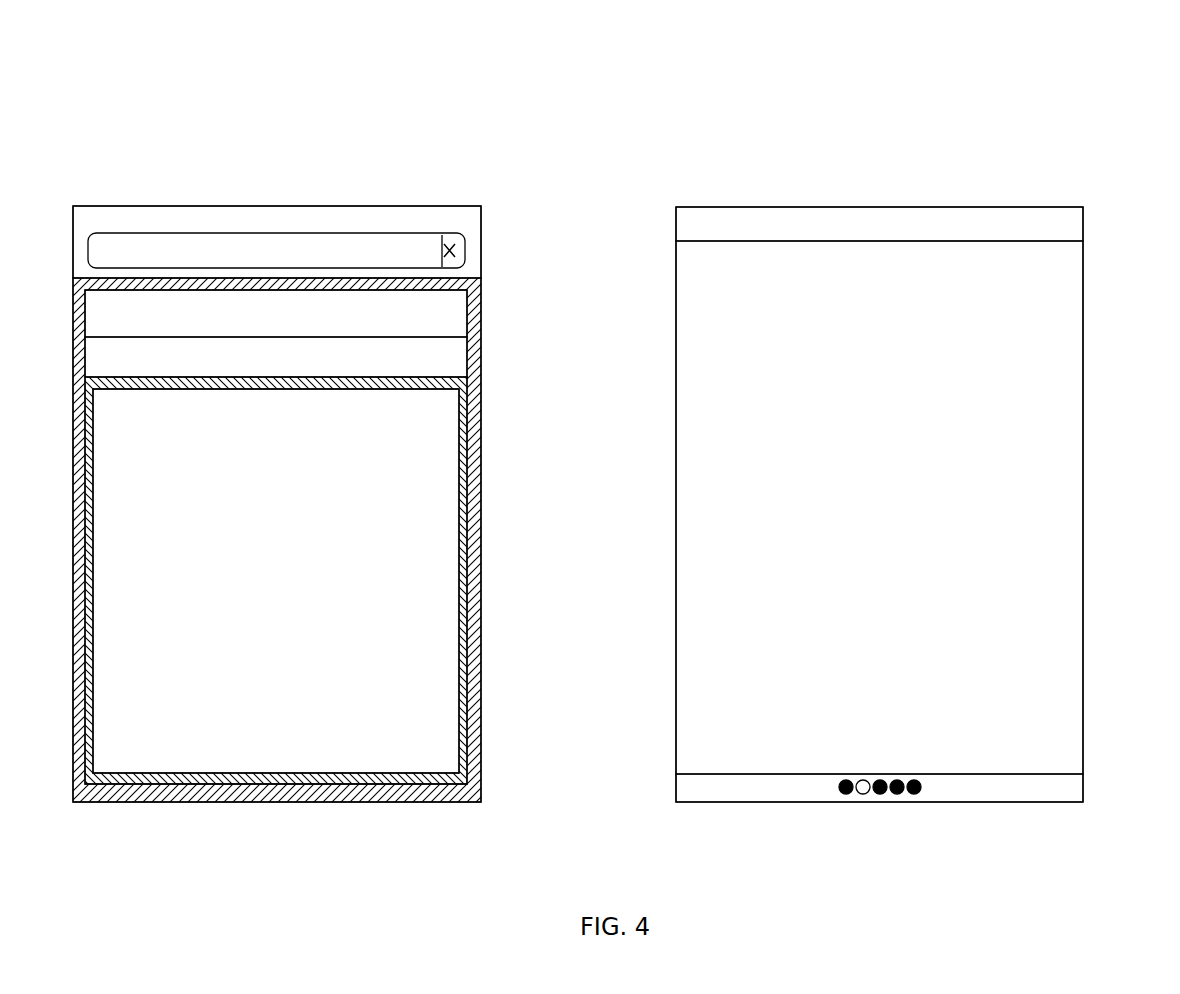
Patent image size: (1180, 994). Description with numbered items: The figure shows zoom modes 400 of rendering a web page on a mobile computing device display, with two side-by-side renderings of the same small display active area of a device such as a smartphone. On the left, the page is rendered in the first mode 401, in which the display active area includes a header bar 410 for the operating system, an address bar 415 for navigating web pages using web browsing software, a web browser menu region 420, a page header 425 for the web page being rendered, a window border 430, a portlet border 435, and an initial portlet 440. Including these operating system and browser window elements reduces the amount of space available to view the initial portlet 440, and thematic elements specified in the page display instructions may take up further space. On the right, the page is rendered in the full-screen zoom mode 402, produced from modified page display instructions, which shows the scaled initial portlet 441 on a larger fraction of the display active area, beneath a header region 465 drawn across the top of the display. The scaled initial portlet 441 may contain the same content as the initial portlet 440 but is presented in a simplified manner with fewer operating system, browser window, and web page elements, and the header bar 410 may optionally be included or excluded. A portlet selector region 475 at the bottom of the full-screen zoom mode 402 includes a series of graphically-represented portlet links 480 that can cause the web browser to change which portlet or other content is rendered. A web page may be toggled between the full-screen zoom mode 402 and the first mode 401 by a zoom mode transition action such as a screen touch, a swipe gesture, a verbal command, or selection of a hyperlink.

The zoom modes 400 is at (958, 95).
The first mode 401 is at (151, 126).
The full-screen zoom mode 402 is at (1054, 152).
The header bar 410 is at (321, 232).
The address bar 415 is at (418, 252).
The web browser menu region 420 is at (295, 325).
The page header 425 is at (295, 366).
The window border 430 is at (466, 285).
The portlet border 435 is at (472, 482).
The initial portlet 440 is at (294, 591).
The scaled initial portlet 441 is at (897, 515).
The header region 465 is at (897, 232).
The portlet selector region 475 is at (727, 783).
The portlet links 480 is at (868, 793).